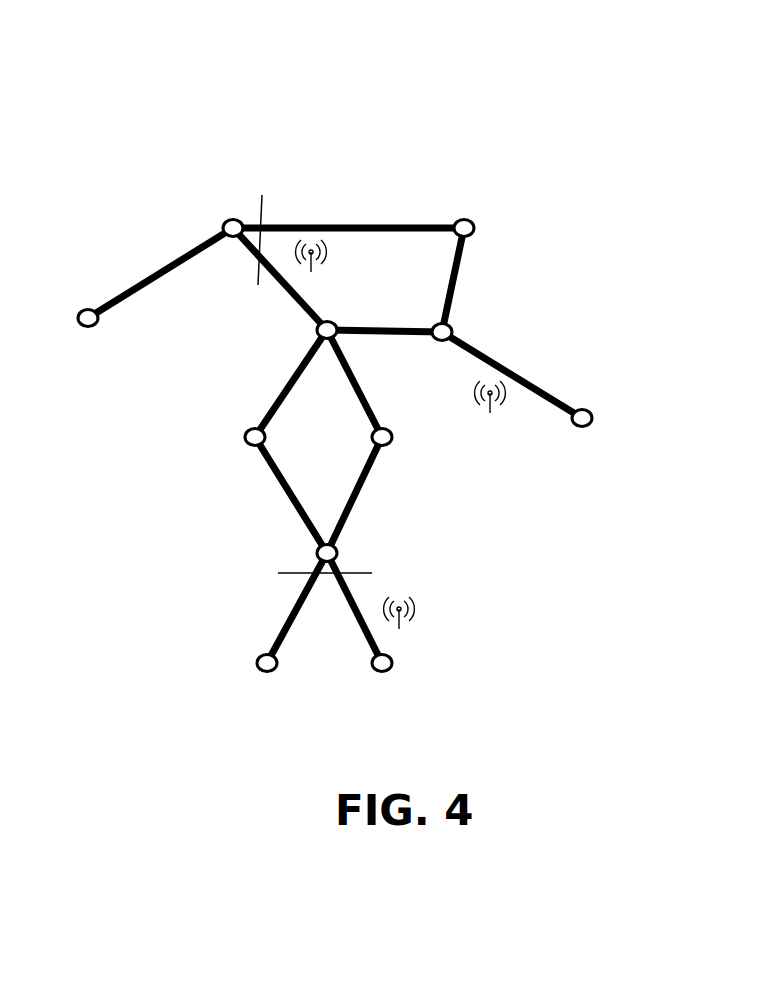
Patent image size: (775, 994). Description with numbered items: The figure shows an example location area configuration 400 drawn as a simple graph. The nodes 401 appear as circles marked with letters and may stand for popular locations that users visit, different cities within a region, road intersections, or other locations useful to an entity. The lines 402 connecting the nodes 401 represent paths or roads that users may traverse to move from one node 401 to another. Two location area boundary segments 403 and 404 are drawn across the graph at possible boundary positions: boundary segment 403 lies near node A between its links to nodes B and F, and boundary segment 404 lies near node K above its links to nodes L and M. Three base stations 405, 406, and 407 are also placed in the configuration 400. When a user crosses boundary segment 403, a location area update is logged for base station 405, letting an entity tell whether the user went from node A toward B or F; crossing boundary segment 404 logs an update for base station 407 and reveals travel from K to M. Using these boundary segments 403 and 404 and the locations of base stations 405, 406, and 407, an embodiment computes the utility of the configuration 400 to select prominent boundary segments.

The location area configuration 400 is at (563, 142).
The nodes 401 is at (480, 222).
The lines 402 is at (170, 263).
The location area boundary segment 403 is at (260, 203).
The location area boundary segment 404 is at (287, 572).
The base station 405 is at (315, 243).
The base station 406 is at (490, 412).
The base station 407 is at (417, 610).